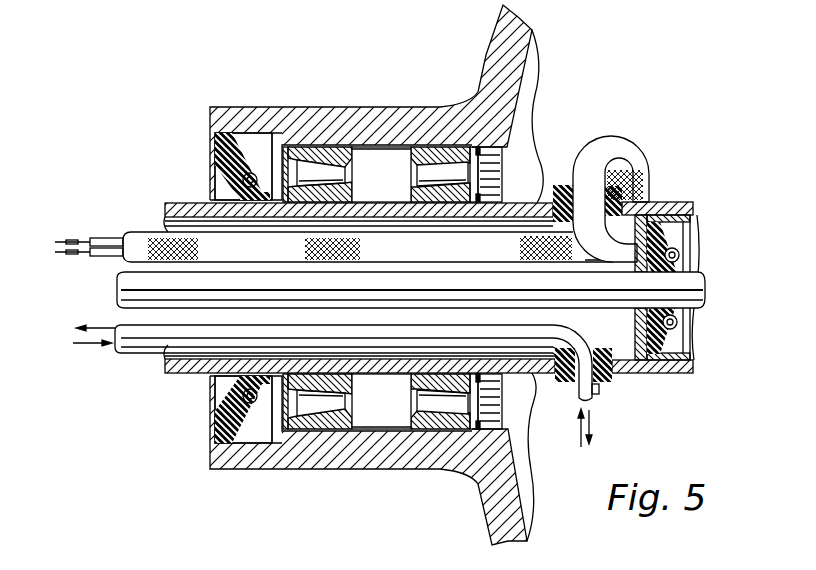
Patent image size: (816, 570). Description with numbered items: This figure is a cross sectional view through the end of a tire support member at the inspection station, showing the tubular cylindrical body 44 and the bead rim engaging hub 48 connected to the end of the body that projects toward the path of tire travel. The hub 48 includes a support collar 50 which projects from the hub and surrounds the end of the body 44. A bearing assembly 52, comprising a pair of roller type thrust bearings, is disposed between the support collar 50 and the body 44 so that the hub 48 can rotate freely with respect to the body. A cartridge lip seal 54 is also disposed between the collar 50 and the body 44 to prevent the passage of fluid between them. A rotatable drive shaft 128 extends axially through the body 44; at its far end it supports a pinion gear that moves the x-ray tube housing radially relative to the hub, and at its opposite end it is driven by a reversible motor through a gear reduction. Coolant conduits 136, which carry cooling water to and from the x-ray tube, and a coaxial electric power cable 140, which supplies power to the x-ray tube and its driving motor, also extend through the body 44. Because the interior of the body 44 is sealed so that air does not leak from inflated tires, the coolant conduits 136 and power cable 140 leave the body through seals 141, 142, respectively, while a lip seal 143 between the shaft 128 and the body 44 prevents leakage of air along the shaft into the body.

The tubular cylindrical body 44 is at (165, 202).
The bead rim engaging hub 48 is at (522, 46).
The support collar 50 is at (310, 107).
The bearing assembly 52 is at (378, 162).
The cartridge lip seal 54 is at (211, 150).
The rotatable drive shaft 128 is at (706, 300).
The coolant conduits 136 is at (599, 396).
The coaxial electric power cable 140 is at (620, 142).
The seal 141 is at (575, 396).
The seal 142 is at (623, 180).
The lip seal 143 is at (650, 242).